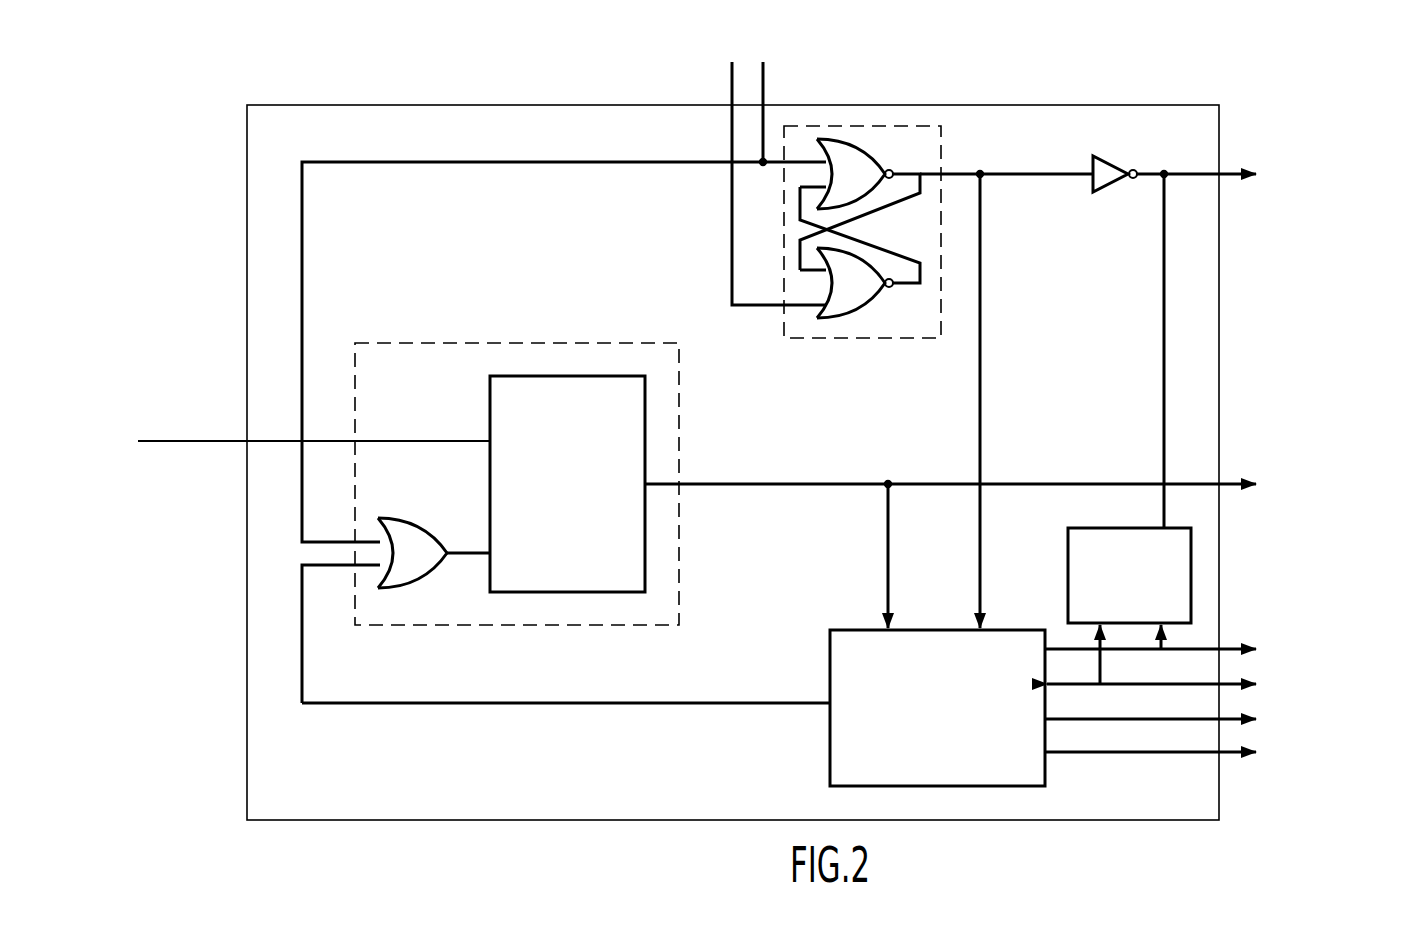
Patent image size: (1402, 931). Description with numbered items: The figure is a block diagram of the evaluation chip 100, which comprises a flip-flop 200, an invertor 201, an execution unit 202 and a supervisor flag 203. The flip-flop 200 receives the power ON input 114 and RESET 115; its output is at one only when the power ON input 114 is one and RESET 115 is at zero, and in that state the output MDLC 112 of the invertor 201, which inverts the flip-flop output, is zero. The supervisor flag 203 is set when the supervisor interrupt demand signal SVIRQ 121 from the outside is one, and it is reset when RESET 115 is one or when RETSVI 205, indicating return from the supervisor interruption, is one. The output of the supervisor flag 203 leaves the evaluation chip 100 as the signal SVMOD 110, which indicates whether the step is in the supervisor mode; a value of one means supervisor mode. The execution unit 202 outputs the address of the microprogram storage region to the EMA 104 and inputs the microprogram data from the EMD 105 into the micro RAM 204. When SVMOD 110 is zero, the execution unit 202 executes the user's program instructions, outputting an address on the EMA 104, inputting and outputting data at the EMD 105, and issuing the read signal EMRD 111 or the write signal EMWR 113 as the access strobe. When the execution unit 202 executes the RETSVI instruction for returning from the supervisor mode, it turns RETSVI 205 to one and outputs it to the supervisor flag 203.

The evaluation chip 100 is at (386, 105).
The power ON input 114 is at (730, 76).
The RESET 115 is at (765, 82).
The MDLC 112 is at (1258, 167).
The invertor 201 is at (1117, 166).
The flip-flop 200 is at (853, 338).
The supervisor interrupt demand signal SVIRQ 121 is at (314, 442).
The supervisor flag 203 is at (679, 572).
The SVMOD 110 is at (1011, 480).
The execution unit 202 is at (853, 630).
The micro RAM 204 is at (1122, 528).
The EMA 104 is at (1218, 640).
The EMD 105 is at (1219, 659).
The read signal EMRD 111 is at (1217, 712).
The EMWR output 113 is at (1218, 745).
The RETSVI 205 is at (566, 690).